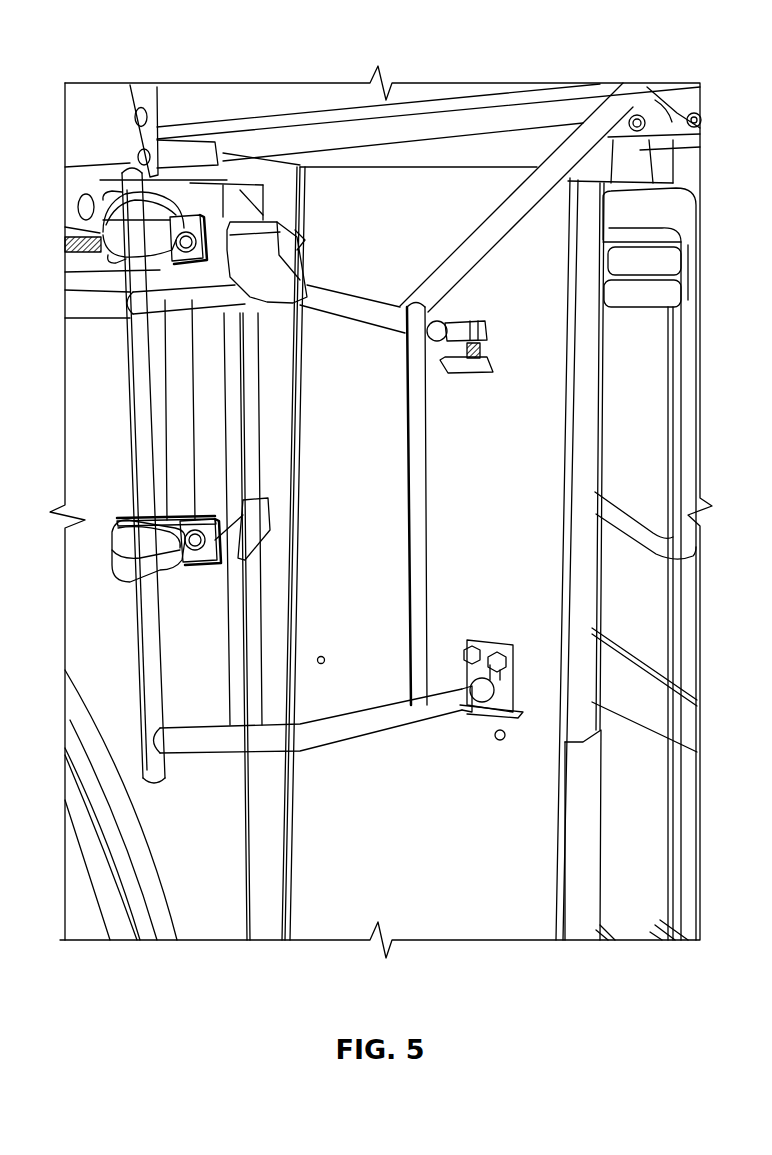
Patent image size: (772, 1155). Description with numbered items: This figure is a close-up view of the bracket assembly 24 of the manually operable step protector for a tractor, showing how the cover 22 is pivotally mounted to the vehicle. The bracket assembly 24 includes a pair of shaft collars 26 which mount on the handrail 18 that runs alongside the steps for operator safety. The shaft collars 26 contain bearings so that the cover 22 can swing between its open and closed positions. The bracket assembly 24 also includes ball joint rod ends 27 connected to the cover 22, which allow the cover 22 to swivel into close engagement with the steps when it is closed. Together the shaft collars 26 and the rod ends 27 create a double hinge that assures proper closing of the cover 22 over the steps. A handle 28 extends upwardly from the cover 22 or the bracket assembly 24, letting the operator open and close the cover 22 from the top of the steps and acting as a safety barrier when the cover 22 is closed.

The handrail 18 is at (178, 384).
The cover 22 is at (487, 918).
The bracket assembly 24 is at (360, 732).
The shaft collars 26 is at (112, 237).
The ball joint rod ends 27 is at (487, 333).
The handle 28 is at (625, 93).